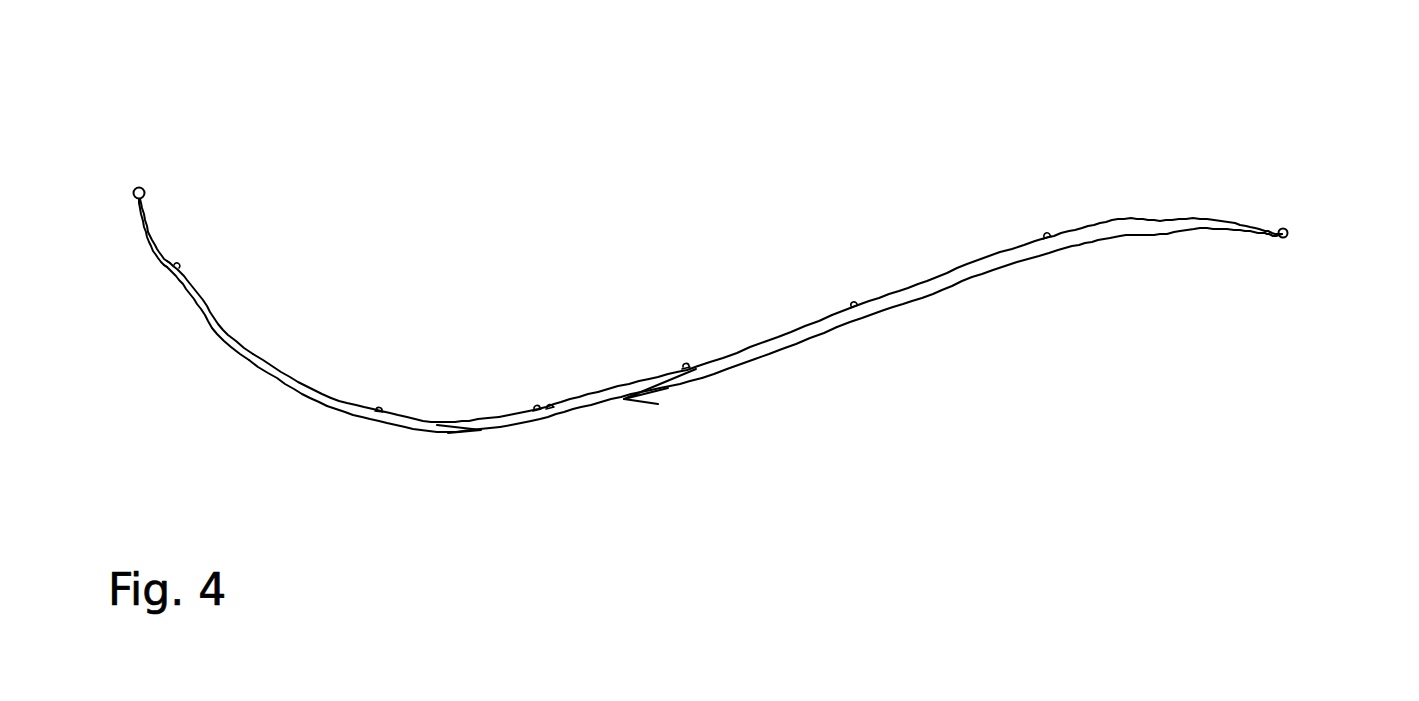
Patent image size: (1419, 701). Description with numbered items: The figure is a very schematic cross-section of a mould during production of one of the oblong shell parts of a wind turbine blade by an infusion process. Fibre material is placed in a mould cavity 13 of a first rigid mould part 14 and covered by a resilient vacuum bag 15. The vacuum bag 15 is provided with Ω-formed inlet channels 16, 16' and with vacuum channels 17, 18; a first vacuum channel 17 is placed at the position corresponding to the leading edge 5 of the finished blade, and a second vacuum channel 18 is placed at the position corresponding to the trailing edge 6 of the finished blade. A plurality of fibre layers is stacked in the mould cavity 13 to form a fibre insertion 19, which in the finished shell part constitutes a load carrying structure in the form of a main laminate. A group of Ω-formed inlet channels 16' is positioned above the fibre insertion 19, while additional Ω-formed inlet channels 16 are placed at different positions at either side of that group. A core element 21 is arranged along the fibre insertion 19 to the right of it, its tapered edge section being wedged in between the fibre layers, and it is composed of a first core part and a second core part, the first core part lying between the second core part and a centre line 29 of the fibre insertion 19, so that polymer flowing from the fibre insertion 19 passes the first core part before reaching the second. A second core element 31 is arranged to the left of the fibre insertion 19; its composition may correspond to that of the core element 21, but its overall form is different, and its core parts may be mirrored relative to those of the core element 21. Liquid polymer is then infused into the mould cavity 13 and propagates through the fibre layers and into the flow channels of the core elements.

The leading edge 5 is at (148, 207).
The trailing edge 6 is at (1274, 236).
The mould cavity 13 is at (279, 371).
The first rigid mould part 14 is at (222, 333).
The resilient vacuum bag 15 is at (918, 283).
The Ω-formed inlet channels 16 is at (612, 322).
The group of Ω-formed inlet channels 16' is at (608, 337).
The first vacuum channel 17 is at (137, 188).
The second vacuum channel 18 is at (1287, 227).
The fibre insertion 19 is at (610, 402).
The core element 21 is at (800, 338).
The centre line 29 is at (563, 413).
The second core element 31 is at (408, 423).